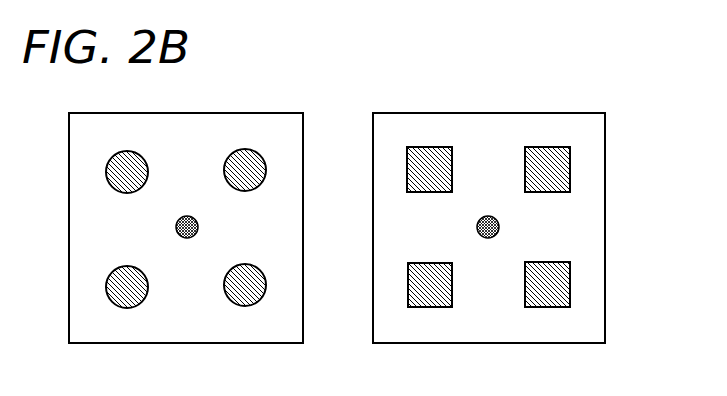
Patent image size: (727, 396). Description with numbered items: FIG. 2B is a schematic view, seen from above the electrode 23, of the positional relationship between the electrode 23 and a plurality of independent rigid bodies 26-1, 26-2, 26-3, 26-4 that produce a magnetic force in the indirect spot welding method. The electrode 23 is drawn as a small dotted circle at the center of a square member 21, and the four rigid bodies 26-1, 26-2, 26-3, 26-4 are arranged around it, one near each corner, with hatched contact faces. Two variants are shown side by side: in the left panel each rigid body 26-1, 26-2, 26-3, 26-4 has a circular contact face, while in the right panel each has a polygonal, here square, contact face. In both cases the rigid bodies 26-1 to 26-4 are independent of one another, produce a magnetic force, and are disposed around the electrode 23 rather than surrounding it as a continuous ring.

The substrate 21 is at (282, 224).
The electrode 23 is at (184, 238).
The independent rigid body 26-1 is at (125, 298).
The independent rigid body 26-2 is at (245, 298).
The independent rigid body 26-3 is at (128, 158).
The independent rigid body 26-4 is at (246, 156).